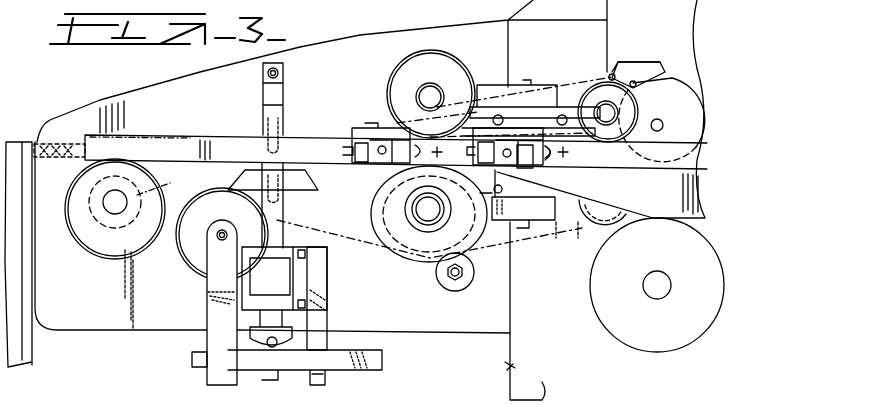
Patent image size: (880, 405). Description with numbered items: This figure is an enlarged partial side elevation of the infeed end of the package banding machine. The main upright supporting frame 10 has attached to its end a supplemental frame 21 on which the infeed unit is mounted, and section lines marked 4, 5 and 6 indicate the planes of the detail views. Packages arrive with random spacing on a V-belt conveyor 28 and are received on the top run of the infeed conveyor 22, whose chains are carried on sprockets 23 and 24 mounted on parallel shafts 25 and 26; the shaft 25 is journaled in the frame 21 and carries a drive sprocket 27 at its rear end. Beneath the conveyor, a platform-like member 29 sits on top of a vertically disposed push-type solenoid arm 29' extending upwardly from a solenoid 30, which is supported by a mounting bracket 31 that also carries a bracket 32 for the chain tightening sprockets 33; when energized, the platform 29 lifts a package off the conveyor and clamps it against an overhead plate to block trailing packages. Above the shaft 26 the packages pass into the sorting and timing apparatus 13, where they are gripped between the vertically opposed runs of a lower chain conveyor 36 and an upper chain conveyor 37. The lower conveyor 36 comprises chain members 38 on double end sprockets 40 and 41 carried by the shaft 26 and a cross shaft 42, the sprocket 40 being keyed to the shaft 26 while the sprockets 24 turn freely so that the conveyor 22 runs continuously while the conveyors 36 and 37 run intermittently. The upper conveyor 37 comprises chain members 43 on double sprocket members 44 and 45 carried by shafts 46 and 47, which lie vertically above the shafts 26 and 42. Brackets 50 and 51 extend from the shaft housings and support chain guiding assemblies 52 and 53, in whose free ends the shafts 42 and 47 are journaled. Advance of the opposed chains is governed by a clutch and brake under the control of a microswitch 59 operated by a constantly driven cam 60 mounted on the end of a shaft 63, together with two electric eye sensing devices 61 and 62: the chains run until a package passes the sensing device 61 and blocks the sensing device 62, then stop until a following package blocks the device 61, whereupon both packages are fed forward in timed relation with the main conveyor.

The section line 4- 4 is at (94, 369).
The section line 5- 5 is at (257, 398).
The section line 6- 6 is at (430, 348).
The upright supporting frame 10 is at (508, 352).
The sorting and timing apparatus 13 is at (640, 57).
The supplemental frame 21 is at (221, 122).
The conveyor 22 is at (172, 225).
The sprocket 23 is at (117, 240).
The sprocket 24 is at (411, 223).
The shaft 25 is at (127, 244).
The shaft 26 is at (424, 212).
The drive sprocket 27 is at (168, 186).
The V-belt conveyor 28 is at (32, 142).
The platform-like member 29 is at (285, 205).
The solenoid arm 29' is at (429, 228).
The solenoid 30 is at (275, 280).
The mounting bracket 31 is at (320, 318).
The bracket 32 is at (210, 333).
The chain tightening sprocket 33 is at (203, 250).
The lower chain conveyor 36 is at (558, 233).
The upper chain conveyor 37 is at (544, 68).
The chain member 38 is at (578, 224).
The double end sprocket 40 is at (470, 258).
The double end sprocket 41 is at (622, 217).
The cross shaft 42 is at (610, 196).
The conveyor chain member 43 is at (560, 76).
The double sprocket member 44 is at (431, 85).
The double sprocket member 45 is at (619, 124).
The shaft 46 is at (432, 92).
The shaft 47 is at (622, 118).
The bracket 50 is at (503, 100).
The bracket 51 is at (521, 277).
The chain guiding assembly 52 is at (517, 206).
The chain guiding assembly 53 is at (560, 135).
The microswitch 59 is at (645, 68).
The cam 60 is at (670, 92).
The electric eye sensing device 61 is at (387, 125).
The electric eye sensing device 62 is at (530, 150).
The shaft 63 is at (663, 122).